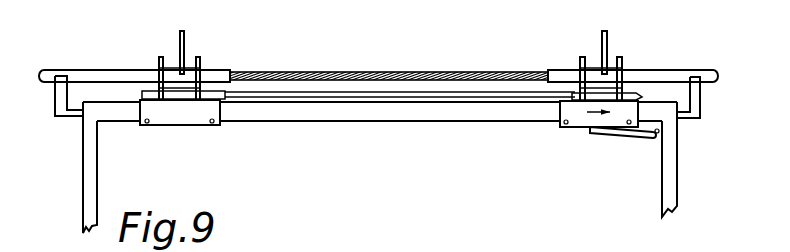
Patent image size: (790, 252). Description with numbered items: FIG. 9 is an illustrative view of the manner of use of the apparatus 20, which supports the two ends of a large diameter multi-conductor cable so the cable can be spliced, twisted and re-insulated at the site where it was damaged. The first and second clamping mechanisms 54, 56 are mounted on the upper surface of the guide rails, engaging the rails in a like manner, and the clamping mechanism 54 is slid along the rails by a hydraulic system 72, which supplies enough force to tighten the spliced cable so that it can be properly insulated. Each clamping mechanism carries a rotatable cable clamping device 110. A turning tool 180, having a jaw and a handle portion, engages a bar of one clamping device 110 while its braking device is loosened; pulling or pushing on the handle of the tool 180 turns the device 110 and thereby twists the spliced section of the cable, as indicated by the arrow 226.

The apparatus 20 is at (518, 134).
The first clamping mechanism 54 is at (623, 62).
The second clamping mechanism 56 is at (201, 55).
The hydraulic system 72 is at (608, 130).
The cable clamping device 110 is at (170, 62).
The turning tool 180 is at (186, 33).
The arrow 226 is at (404, 90).